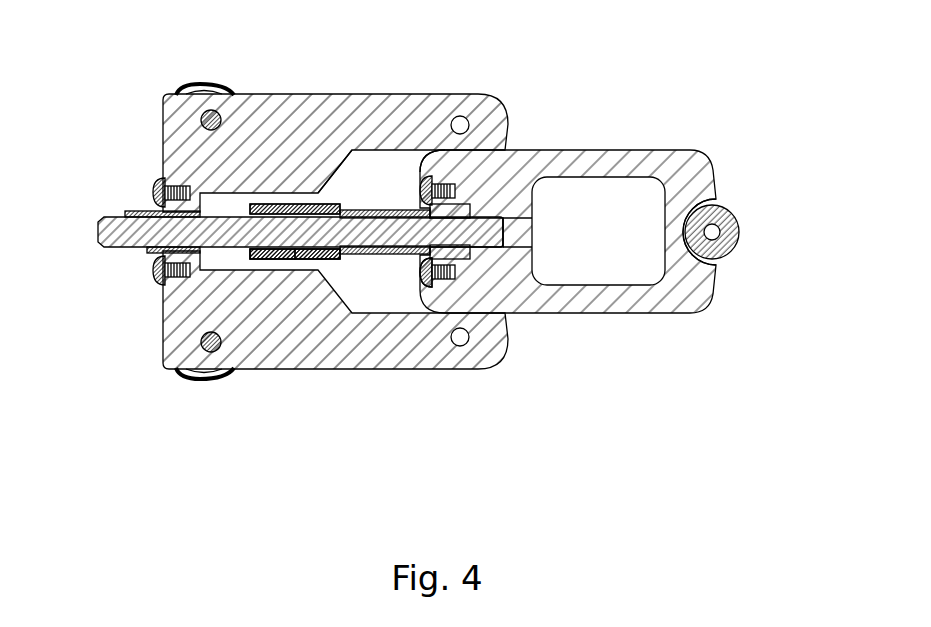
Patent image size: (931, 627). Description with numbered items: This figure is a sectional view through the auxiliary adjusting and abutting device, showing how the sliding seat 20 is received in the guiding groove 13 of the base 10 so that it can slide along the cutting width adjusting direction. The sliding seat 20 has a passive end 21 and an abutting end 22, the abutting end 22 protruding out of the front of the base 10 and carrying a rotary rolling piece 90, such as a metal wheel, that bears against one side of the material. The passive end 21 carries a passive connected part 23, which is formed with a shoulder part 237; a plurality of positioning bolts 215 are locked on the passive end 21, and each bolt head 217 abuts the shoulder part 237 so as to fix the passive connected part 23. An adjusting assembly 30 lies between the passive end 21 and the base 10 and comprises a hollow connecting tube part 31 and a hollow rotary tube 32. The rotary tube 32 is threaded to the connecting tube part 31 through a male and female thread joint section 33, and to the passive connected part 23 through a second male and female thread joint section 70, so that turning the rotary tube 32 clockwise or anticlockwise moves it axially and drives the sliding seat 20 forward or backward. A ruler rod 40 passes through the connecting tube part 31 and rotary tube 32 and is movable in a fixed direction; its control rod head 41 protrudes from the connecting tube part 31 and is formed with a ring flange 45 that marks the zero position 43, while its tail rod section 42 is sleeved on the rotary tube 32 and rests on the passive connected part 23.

The base 10 is at (418, 92).
The guiding groove 13 is at (349, 167).
The sliding seat 20 is at (653, 136).
The passive end 21 is at (470, 160).
The positioning bolts 215 is at (457, 190).
The bolt head 217 is at (428, 287).
The abutting end 22 is at (707, 196).
The passive connected part 23 is at (409, 203).
The shoulder part 237 is at (427, 253).
The adjusting assembly 30 is at (275, 437).
The connecting tube part 31 is at (237, 272).
The rotary tube 32 is at (332, 262).
The male and female thread joint section 33 is at (262, 204).
The ruler rod 40 is at (314, 226).
The control rod head 41 is at (118, 216).
The tail rod section 42 is at (510, 240).
The zero position 43 is at (150, 253).
The ring flange 45 is at (147, 211).
The second male and female thread joint section 70 is at (368, 209).
The rotary rolling piece 90 is at (734, 262).